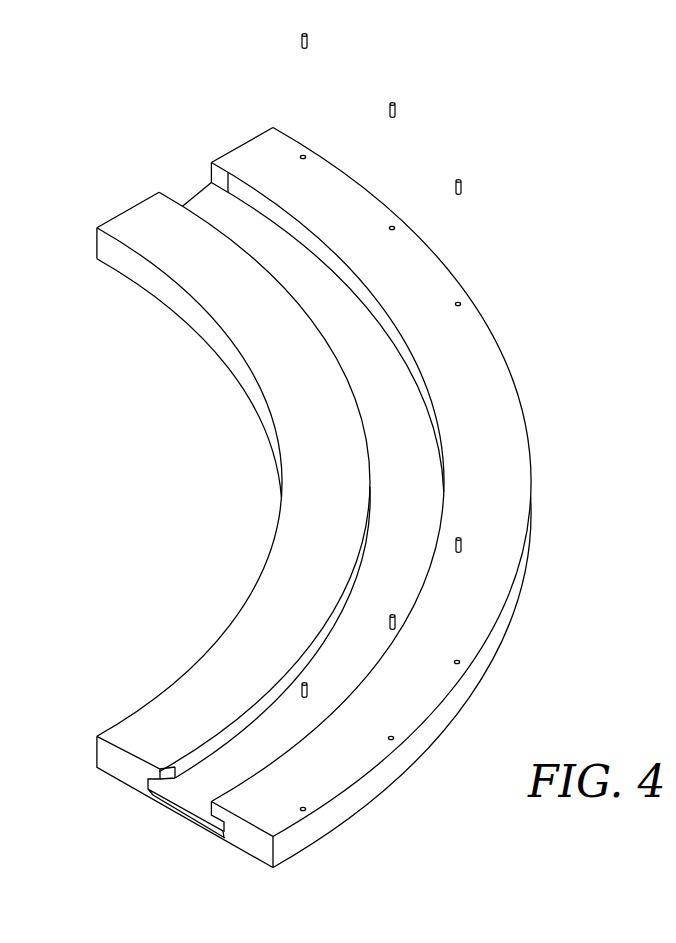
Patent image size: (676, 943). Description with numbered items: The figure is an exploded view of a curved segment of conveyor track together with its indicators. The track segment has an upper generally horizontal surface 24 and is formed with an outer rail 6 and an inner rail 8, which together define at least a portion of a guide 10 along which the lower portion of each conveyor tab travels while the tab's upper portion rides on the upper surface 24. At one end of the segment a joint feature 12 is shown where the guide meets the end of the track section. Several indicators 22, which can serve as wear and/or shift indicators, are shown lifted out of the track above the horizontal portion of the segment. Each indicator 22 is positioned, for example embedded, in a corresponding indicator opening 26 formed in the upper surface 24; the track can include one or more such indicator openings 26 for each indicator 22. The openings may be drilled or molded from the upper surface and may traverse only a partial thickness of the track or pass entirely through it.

The outer rail 6 is at (508, 402).
The inner rail 8 is at (288, 510).
The guide 10 is at (183, 790).
The tongue 12 is at (211, 198).
The indicators 22 is at (463, 544).
The upper generally horizontal surface 24 is at (138, 724).
The indicator openings 26 is at (459, 303).